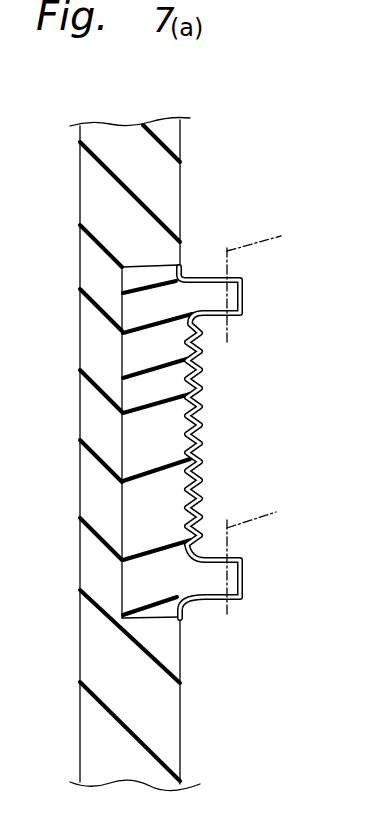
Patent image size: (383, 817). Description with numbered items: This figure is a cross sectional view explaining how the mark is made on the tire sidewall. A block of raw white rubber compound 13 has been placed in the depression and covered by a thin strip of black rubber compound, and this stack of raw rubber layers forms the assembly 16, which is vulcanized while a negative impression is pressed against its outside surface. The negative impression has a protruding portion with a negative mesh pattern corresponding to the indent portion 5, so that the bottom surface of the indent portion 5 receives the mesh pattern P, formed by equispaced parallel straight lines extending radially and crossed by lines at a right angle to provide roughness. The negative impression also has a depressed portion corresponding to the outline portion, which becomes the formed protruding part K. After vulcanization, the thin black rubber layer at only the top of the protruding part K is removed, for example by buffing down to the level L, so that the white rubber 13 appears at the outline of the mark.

The assembly 16 is at (206, 181).
The white rubber compound block 13 is at (147, 593).
The indent portion 5 is at (213, 405).
The mesh pattern P is at (213, 431).
The level L is at (263, 418).
The protruding part K is at (250, 291).